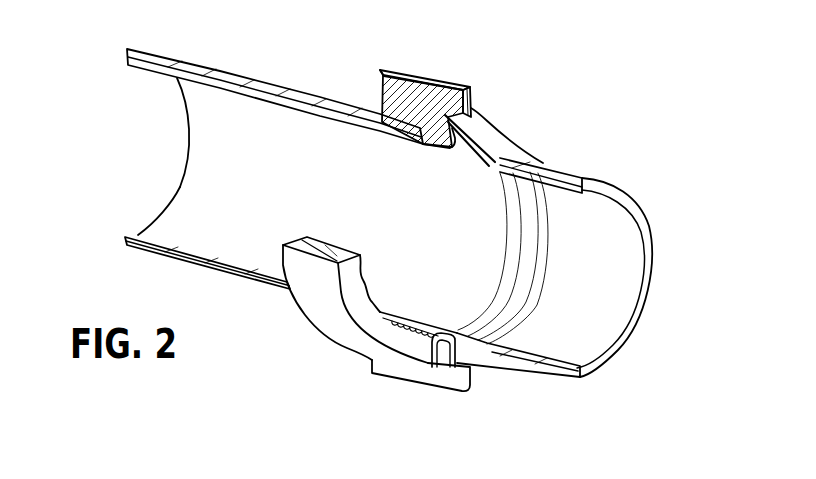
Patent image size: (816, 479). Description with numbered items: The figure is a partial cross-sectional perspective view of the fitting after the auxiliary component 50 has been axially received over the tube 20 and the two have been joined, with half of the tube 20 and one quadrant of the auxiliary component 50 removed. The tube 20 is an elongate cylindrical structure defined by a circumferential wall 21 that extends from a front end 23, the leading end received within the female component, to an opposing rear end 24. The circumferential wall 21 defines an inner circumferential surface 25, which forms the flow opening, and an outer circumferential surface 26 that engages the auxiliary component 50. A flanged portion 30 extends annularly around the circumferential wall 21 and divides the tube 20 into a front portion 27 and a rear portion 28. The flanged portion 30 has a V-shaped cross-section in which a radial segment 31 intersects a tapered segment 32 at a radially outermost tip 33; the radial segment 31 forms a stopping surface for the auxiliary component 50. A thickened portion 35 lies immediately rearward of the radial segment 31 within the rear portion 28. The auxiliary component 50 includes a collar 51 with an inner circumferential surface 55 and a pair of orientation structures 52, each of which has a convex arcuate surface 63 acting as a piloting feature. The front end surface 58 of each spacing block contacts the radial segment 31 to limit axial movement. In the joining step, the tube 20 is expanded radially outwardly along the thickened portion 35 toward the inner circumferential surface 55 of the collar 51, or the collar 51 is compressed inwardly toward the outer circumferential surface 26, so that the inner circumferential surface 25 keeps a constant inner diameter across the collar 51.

The tube 20 is at (546, 260).
The circumferential wall 21 is at (275, 88).
The front end 23 is at (640, 206).
The rear end 24 is at (189, 138).
The inner circumferential surface 25 is at (164, 228).
The outer circumferential surface 26 is at (314, 99).
The front portion 27 is at (543, 378).
The rear portion 28 is at (265, 297).
The flanged portion 30 is at (541, 135).
The radial segment 31 is at (461, 151).
The tapered segment 32 is at (504, 134).
The tip 33 is at (462, 92).
The thickened portion 35 is at (407, 145).
The auxiliary component 50 is at (397, 206).
The collar 51 is at (313, 347).
The orientation structure 52 is at (416, 66).
The inner circumferential surface 55 is at (423, 145).
The front end surface 58 is at (466, 118).
The arcuate surface 63 is at (478, 108).